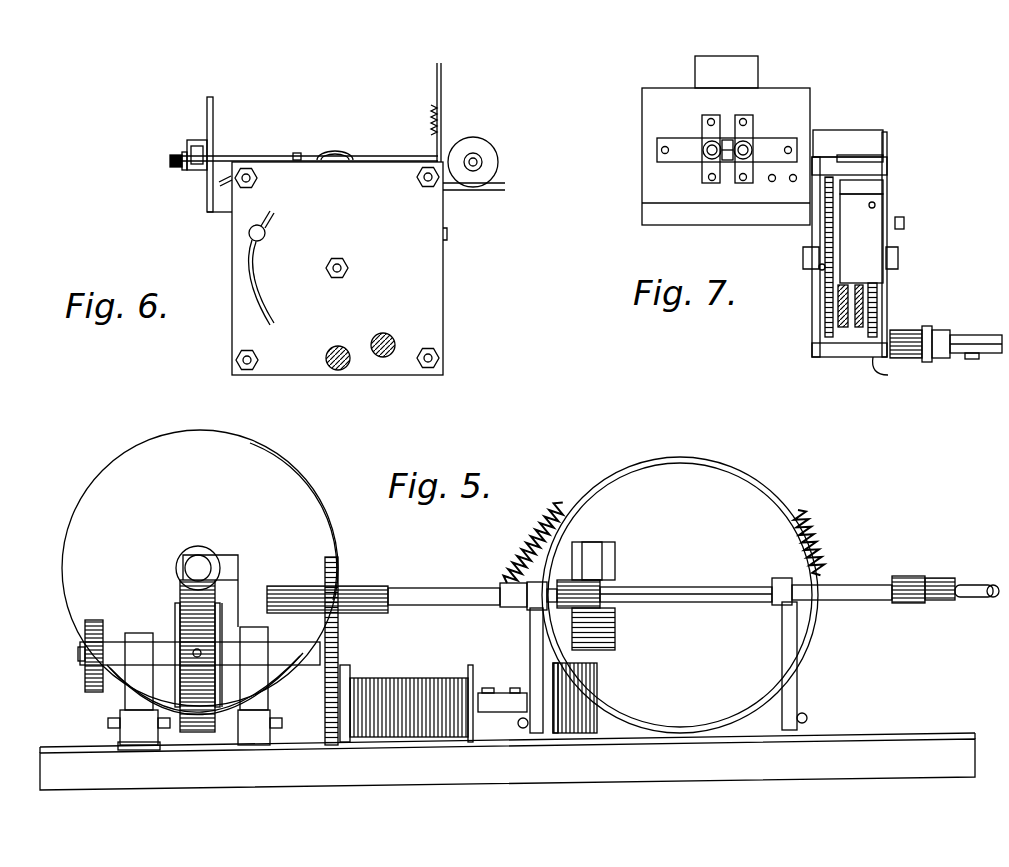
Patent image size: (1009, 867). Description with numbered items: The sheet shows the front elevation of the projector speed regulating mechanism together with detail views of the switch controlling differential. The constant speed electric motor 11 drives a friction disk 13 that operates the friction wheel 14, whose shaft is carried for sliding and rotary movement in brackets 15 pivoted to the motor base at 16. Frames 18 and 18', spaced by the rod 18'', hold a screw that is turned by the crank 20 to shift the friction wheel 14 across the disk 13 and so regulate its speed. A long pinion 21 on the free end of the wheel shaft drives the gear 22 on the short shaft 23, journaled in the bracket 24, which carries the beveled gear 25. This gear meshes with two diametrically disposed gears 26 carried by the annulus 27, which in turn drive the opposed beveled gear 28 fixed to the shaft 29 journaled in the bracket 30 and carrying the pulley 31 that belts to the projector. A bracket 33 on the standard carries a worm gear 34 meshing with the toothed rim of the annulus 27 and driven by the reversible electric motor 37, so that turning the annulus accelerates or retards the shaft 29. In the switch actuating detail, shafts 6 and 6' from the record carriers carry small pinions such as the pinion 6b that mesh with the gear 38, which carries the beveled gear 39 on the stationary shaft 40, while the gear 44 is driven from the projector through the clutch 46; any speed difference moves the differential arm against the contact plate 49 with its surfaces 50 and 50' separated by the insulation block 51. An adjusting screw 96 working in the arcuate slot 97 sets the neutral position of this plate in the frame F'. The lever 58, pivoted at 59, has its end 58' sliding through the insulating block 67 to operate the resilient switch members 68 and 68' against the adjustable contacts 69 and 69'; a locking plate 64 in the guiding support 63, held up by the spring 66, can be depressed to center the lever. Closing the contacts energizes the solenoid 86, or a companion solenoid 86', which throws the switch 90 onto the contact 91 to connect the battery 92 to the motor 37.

In FIG. 6, the shaft 6 is at (383, 329).
In FIG. 7, the shaft 6 is at (946, 328).
In FIG. 6, the shaft 6' is at (321, 352).
In FIG. 7, the shaft 6' is at (979, 374).
In FIG. 7, the small pinion 6b is at (876, 366).
In FIG. 5, the electric motor 11 is at (757, 480).
In FIG. 5, the friction disk 13 is at (713, 478).
In FIG. 5, the friction wheel 14 is at (447, 592).
In FIG. 5, the bracket 15 is at (535, 605).
In FIG. 5, the pivot 16 is at (522, 725).
In FIG. 5, the frame 18 is at (923, 561).
In FIG. 5, the frame 18' is at (664, 542).
In FIG. 5, the rod 18'' is at (686, 569).
In FIG. 5, the crank 20 is at (978, 585).
In FIG. 5, the long pinion 21 is at (352, 590).
In FIG. 5, the gear 22 is at (338, 632).
In FIG. 5, the short shaft 23 is at (290, 675).
In FIG. 5, the bracket 24 is at (257, 643).
In FIG. 5, the beveled gear 25 is at (220, 615).
In FIG. 5, the gear 26 is at (180, 650).
In FIG. 5, the annulus 27 is at (188, 590).
In FIG. 5, the beveled gear 28 is at (178, 612).
In FIG. 5, the shaft 29 is at (118, 640).
In FIG. 5, the bracket 30 is at (138, 653).
In FIG. 5, the pulley 31 is at (87, 672).
In FIG. 5, the bracket 33 is at (223, 557).
In FIG. 5, the worm gear 34 is at (195, 560).
In FIG. 5, the reversible electric motor 37 is at (263, 465).
In FIG. 7, the gear 38 is at (877, 293).
In FIG. 7, the beveled gear 39 is at (853, 323).
In FIG. 7, the stationary shaft 40 is at (821, 268).
In FIG. 7, the gear 44 is at (828, 298).
In FIG. 6, the clutch 46 is at (337, 153).
In FIG. 7, the metal contact plate 49 is at (877, 203).
In FIG. 7, the contact surface 50 is at (860, 129).
In FIG. 7, the contact surface 50' is at (892, 238).
In FIG. 7, the block of insulation 51 is at (875, 187).
In FIG. 6, the lever 58 is at (308, 141).
In FIG. 7, the lever end 58' is at (733, 124).
In FIG. 6, the pivot 59 is at (295, 153).
In FIG. 6, the guiding support 63 is at (445, 133).
In FIG. 6, the locking plate 64 is at (442, 75).
In FIG. 7, the locking plate 64 is at (758, 65).
In FIG. 6, the spring 66 is at (428, 120).
In FIG. 6, the supporting block 67 is at (213, 102).
In FIG. 7, the supporting block 67 is at (657, 93).
In FIG. 7, the resilient switch member 68 is at (726, 168).
In FIG. 6, the resilient switch member 68' is at (184, 182).
In FIG. 7, the resilient switch member 68' is at (748, 137).
In FIG. 7, the adjustable contact member 69 is at (731, 133).
In FIG. 6, the adjustable contact member 69' is at (150, 155).
In FIG. 5, the solenoid 86 is at (406, 693).
In FIG. 5, the coil 86' is at (601, 698).
In FIG. 5, the switch 90 is at (508, 692).
In FIG. 5, the contact 91 is at (493, 688).
In FIG. 5, the battery 92 is at (516, 688).
In FIG. 6, the adjusting screw 96 is at (265, 235).
In FIG. 7, the adjusting screw 96 is at (903, 220).
In FIG. 6, the arcuate slot 97 is at (268, 310).
In FIG. 6, the frame plate F' is at (357, 268).
In FIG. 7, the frame plate F' is at (869, 243).